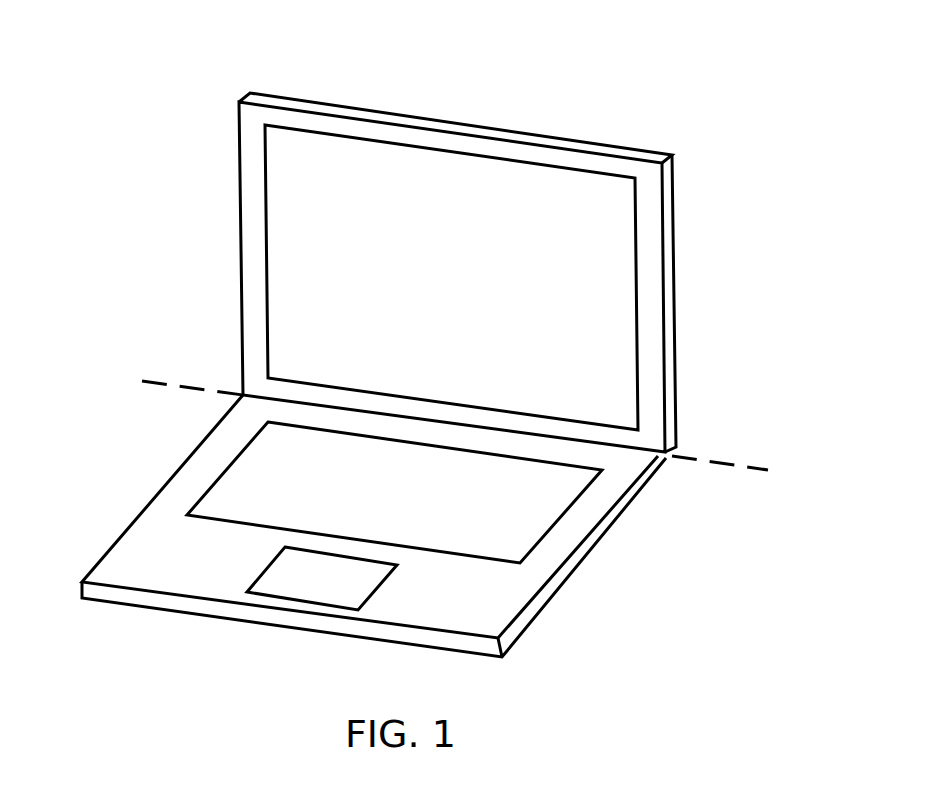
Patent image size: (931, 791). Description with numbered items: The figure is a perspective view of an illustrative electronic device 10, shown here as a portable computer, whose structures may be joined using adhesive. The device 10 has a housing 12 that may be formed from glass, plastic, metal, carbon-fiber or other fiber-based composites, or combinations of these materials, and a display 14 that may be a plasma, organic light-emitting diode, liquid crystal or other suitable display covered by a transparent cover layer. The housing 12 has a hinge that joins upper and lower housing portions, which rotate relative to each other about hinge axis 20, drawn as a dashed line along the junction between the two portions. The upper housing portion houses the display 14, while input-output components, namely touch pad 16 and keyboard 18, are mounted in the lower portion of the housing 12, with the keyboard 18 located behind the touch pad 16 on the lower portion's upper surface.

The electronic device 10 is at (709, 102).
The housing 12 is at (670, 370).
The display 14 is at (487, 173).
The touch pad 16 is at (308, 588).
The keyboard 18 is at (255, 475).
The hinge axis 20 is at (145, 382).